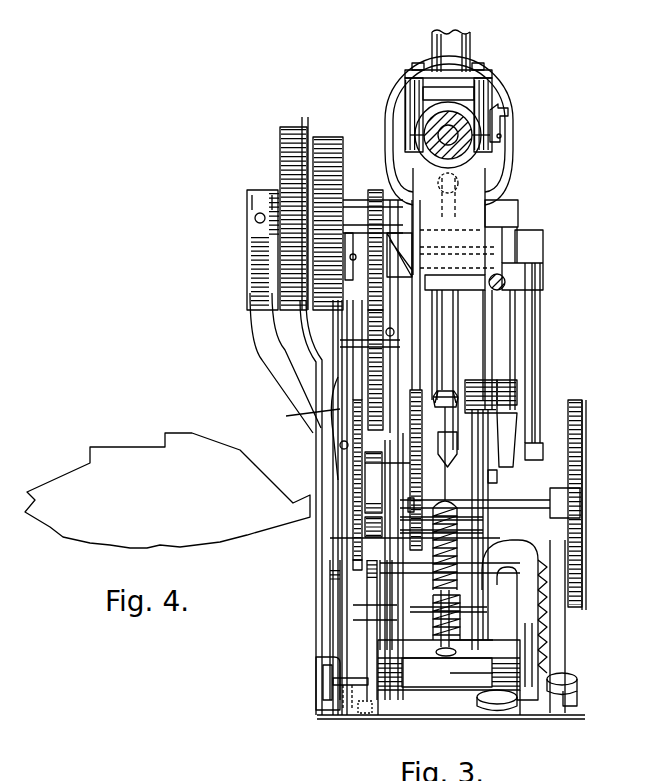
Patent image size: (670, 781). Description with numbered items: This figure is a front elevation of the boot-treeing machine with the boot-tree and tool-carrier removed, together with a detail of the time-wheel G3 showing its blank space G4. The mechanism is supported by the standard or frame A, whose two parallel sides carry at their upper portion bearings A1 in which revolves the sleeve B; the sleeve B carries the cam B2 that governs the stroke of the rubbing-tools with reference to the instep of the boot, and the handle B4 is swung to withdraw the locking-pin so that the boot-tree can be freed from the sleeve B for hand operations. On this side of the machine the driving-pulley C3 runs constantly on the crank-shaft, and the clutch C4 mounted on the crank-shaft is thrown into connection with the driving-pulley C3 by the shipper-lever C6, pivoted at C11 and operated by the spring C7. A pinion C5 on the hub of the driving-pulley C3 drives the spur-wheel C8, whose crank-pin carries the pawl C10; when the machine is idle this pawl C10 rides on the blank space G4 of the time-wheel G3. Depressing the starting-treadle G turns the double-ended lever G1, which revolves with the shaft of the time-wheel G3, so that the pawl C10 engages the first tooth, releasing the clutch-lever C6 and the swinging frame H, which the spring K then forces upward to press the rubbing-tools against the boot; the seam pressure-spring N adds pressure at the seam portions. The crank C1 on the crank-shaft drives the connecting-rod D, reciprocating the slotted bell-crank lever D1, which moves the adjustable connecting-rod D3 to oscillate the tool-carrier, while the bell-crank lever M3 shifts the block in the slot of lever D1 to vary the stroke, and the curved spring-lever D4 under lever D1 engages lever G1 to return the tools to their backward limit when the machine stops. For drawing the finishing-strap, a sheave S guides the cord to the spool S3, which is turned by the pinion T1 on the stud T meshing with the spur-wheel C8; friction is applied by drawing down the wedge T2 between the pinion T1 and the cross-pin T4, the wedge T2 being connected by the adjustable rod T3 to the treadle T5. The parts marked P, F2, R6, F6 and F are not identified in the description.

In FIG. 3, the piston rod P is at (462, 25).
In FIG. 3, the cam B2 is at (487, 57).
In FIG. 3, the bearings A1 is at (470, 114).
In FIG. 3, the handle B4 is at (508, 111).
In FIG. 3, the sleeve B is at (482, 144).
In FIG. 3, the driving-pulley C3 is at (280, 141).
In FIG. 3, the clutch C4 is at (252, 193).
In FIG. 3, the wedge T2 is at (290, 241).
In FIG. 3, the cross-pin T4 is at (350, 263).
In FIG. 3, the pinion C5 is at (375, 190).
In FIG. 3, the sheave S is at (395, 180).
In FIG. 3, the spur-wheel C8 is at (392, 364).
In FIG. 3, the stud T is at (256, 354).
In FIG. 3, the shipper-lever C6 is at (252, 326).
In FIG. 3, the adjustable rod T3 is at (298, 411).
In FIG. 3, the pawl C10 is at (360, 390).
In FIG. 3, the pivot C11 is at (340, 446).
In FIG. 3, the spool S3 is at (365, 302).
In FIG. 3, the pinion T1 is at (388, 284).
In FIG. 3, the crank C1 is at (518, 208).
In FIG. 3, the connecting-rod D is at (530, 257).
In FIG. 3, the adjustable connecting-rod D3 is at (505, 292).
In FIG. 3, the slotted bell-crank lever D1 is at (520, 353).
In FIG. 3, the bell-crank lever M3 is at (515, 398).
In FIG. 3, the curved spring-lever D4 is at (510, 444).
In FIG. 3, the standard or frame A is at (480, 482).
In FIG. 3, the seam pressure-spring N is at (445, 545).
In FIG. 3, the spring K is at (458, 630).
In FIG. 3, the swinging frame H is at (392, 598).
In FIG. 3, the bar F2 is at (451, 587).
In FIG. 3, the stop R6 is at (322, 571).
In FIG. 3, the time-wheel G3 is at (357, 613).
In FIG. 4, the time-wheel G3 is at (167, 490).
In FIG. 3, the treadle T5 is at (318, 670).
In FIG. 3, the spring C7 is at (366, 716).
In FIG. 3, the ratchet bar F6 is at (540, 644).
In FIG. 3, the wheel F is at (503, 709).
In FIG. 3, the starting-treadle G is at (580, 685).
In FIG. 3, the double-ended lever G1 is at (510, 496).
In FIG. 4, the blank space G4 is at (253, 470).